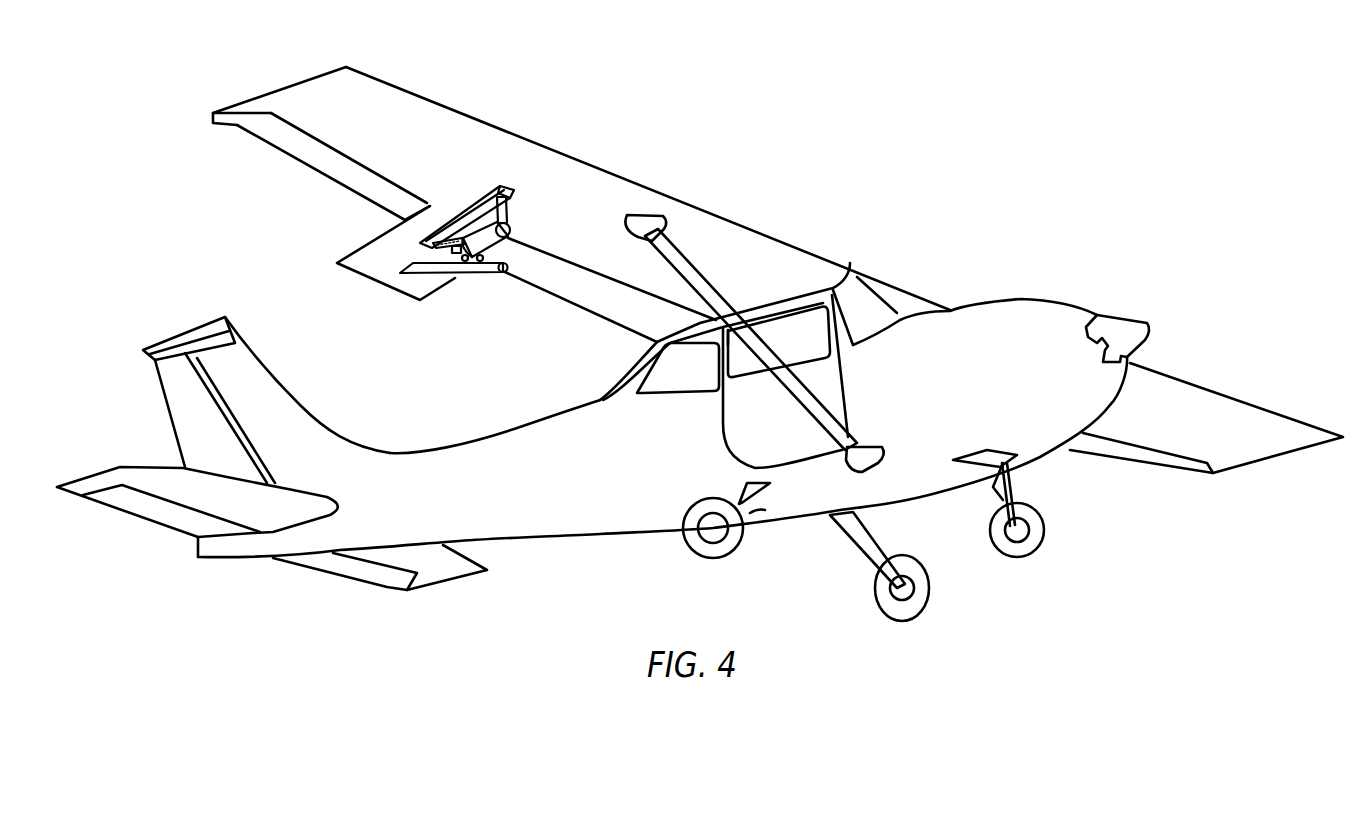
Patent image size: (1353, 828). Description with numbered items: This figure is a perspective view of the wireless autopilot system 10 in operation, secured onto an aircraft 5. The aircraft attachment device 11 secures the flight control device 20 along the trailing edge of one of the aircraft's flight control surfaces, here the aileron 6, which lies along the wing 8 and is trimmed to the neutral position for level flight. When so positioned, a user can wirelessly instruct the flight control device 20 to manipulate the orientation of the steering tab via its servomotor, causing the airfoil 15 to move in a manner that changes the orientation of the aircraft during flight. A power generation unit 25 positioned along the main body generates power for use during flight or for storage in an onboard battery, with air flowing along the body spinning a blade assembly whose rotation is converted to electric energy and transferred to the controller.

The aircraft 5 is at (981, 292).
The aileron 6 is at (277, 133).
The wing 8 is at (568, 204).
The wireless autopilot system 10 is at (384, 236).
The aircraft attachment device 11 is at (439, 222).
The airfoil 15 is at (418, 299).
The flight control device 20 is at (509, 191).
The power generation unit 25 is at (490, 265).